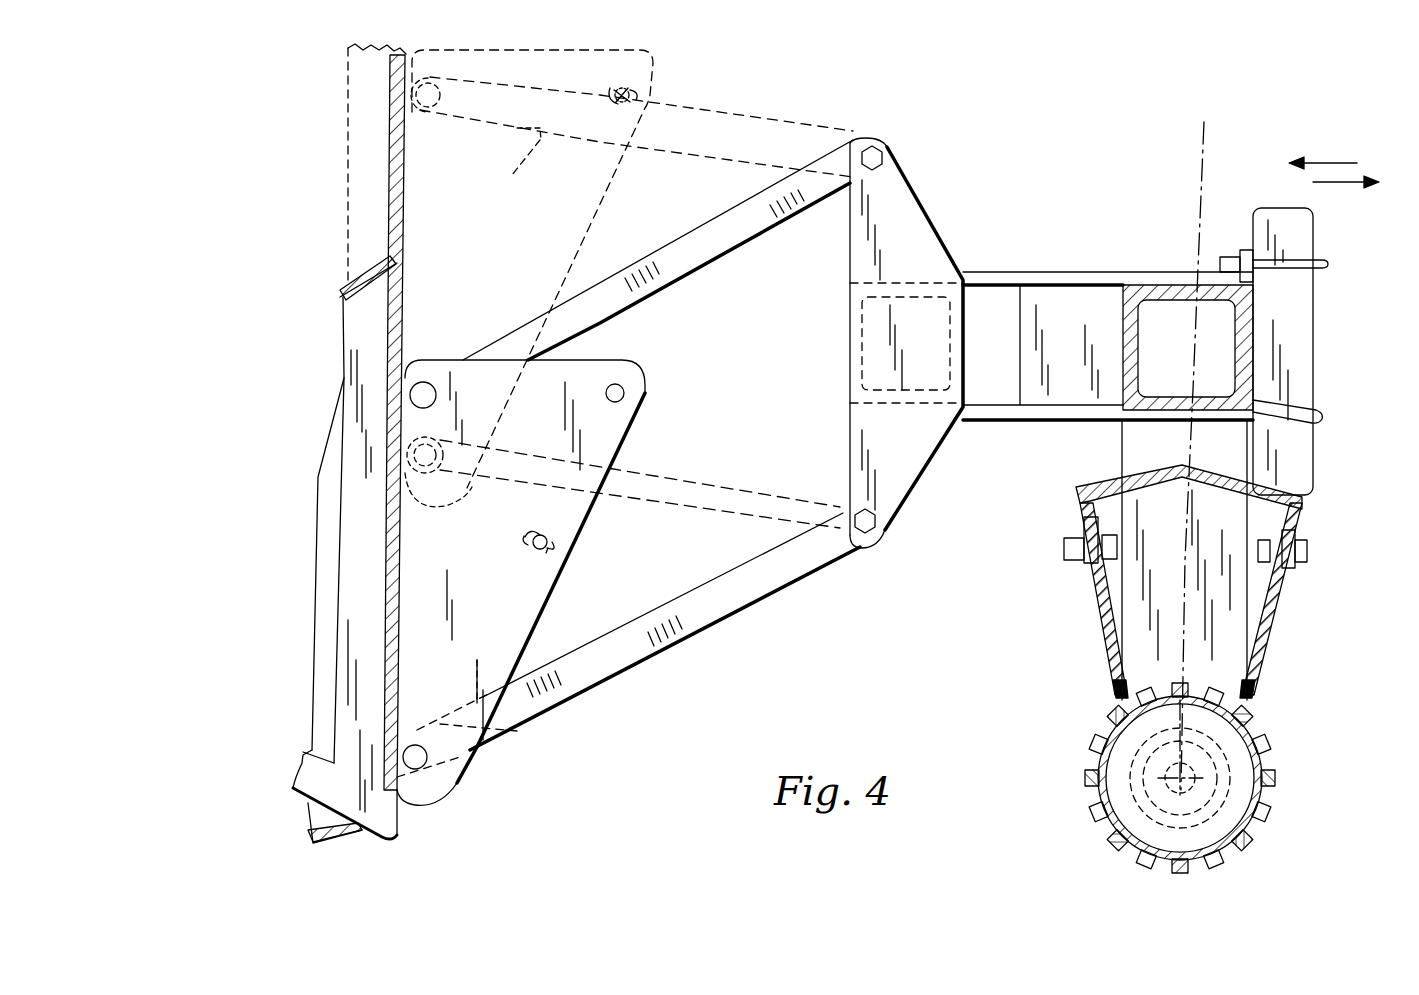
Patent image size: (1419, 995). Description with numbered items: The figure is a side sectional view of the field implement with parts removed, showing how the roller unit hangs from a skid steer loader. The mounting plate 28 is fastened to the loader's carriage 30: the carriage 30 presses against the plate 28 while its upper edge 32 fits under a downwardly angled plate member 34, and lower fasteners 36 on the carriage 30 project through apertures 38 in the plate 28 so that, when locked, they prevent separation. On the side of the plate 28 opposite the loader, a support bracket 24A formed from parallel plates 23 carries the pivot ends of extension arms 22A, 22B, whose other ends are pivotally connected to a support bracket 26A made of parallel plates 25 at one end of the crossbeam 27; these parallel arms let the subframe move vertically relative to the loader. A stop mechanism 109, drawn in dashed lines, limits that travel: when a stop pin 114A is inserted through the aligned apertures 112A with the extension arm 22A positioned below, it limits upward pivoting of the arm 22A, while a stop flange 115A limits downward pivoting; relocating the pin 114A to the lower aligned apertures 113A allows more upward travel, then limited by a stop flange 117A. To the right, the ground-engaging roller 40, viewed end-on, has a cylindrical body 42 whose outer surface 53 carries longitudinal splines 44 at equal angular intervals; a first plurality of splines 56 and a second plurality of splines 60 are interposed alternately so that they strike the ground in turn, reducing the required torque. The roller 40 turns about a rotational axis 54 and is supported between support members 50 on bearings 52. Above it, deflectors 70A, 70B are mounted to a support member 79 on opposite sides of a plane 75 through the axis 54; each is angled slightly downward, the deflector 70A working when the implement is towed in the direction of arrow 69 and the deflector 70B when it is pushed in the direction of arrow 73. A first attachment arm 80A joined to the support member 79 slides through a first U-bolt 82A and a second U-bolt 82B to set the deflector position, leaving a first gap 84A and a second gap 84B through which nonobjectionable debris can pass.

The extension arm 22A is at (718, 255).
The extension arm 22B is at (780, 588).
The parallel plates 23 is at (463, 781).
The support bracket 24A is at (622, 462).
The parallel plates 25 is at (945, 240).
The support bracket 26A is at (942, 204).
The crossbeam 27 is at (907, 403).
The mounting plate 28 is at (380, 615).
The carriage 30 is at (304, 685).
The upper edge 32 is at (340, 297).
The plate member 34 is at (390, 283).
The lower fasteners 36 is at (302, 772).
The apertures 38 is at (363, 835).
The ground-engaging roller 40 is at (1179, 797).
The cylindrical body 42 is at (1253, 823).
The longitudinal splines 44 is at (1177, 797).
The support members 50 is at (1225, 644).
The bearings 52 is at (1213, 851).
The outer surface 53 is at (1193, 863).
The rotational axis 54 is at (1188, 782).
The first plurality of splines 56 is at (1278, 762).
The second plurality of splines 60 is at (1090, 806).
The arrow 69 is at (1327, 160).
The deflector 70A is at (1090, 595).
The deflector 70B is at (1282, 595).
The arrow 73 is at (1323, 187).
The plane 75 is at (1206, 155).
The support member 79 is at (1080, 488).
The first attachment arm 80A is at (1311, 337).
The first U-bolt 82A is at (1318, 259).
The second U-bolt 82B is at (1318, 413).
The first gap 84A is at (1098, 697).
The second gap 84B is at (1268, 698).
The stop mechanism 109 is at (672, 96).
The aligned apertures 112A is at (613, 384).
The lower aligned apertures 113A is at (533, 541).
The stop pin 114A is at (556, 556).
The stop flange 115A is at (524, 164).
The stop flange 117A is at (513, 731).